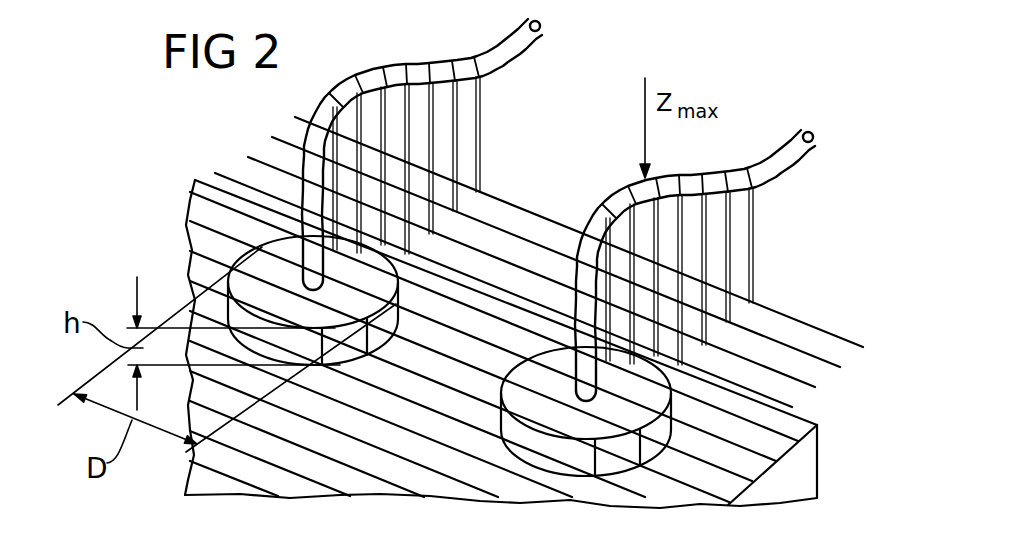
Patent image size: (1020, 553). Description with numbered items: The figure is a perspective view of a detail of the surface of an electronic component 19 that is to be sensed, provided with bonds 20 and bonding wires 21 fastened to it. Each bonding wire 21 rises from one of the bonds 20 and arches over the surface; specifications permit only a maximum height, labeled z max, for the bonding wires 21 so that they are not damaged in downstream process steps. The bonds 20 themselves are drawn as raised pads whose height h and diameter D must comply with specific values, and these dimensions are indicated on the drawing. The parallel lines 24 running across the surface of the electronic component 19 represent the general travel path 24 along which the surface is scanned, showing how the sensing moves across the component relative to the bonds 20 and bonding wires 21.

The electronic component 19 is at (792, 467).
The bond 20 is at (232, 262).
The bonding wire 21 is at (510, 50).
The travel path 24 is at (768, 360).